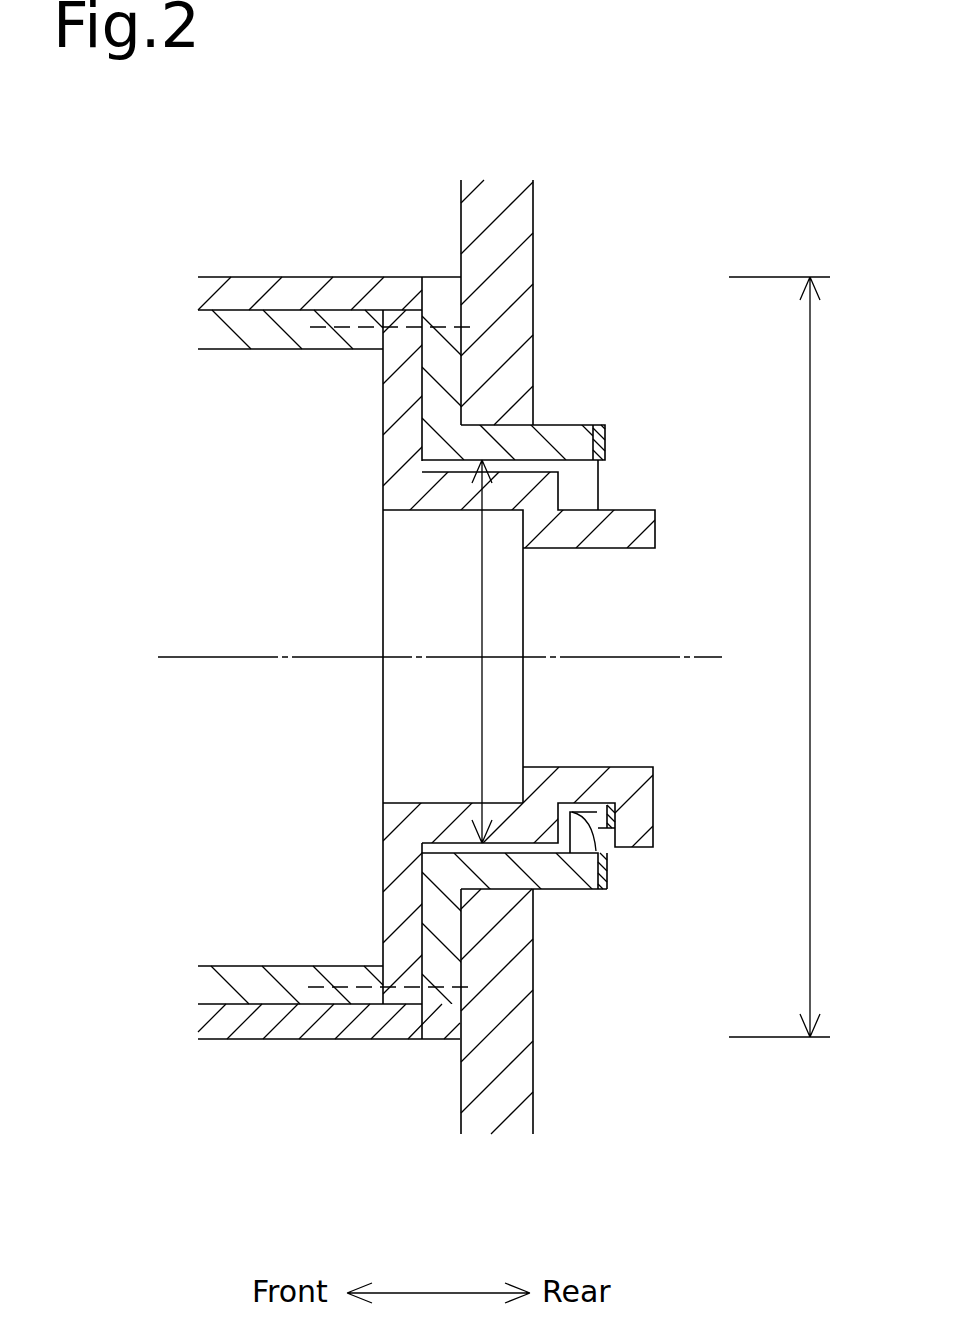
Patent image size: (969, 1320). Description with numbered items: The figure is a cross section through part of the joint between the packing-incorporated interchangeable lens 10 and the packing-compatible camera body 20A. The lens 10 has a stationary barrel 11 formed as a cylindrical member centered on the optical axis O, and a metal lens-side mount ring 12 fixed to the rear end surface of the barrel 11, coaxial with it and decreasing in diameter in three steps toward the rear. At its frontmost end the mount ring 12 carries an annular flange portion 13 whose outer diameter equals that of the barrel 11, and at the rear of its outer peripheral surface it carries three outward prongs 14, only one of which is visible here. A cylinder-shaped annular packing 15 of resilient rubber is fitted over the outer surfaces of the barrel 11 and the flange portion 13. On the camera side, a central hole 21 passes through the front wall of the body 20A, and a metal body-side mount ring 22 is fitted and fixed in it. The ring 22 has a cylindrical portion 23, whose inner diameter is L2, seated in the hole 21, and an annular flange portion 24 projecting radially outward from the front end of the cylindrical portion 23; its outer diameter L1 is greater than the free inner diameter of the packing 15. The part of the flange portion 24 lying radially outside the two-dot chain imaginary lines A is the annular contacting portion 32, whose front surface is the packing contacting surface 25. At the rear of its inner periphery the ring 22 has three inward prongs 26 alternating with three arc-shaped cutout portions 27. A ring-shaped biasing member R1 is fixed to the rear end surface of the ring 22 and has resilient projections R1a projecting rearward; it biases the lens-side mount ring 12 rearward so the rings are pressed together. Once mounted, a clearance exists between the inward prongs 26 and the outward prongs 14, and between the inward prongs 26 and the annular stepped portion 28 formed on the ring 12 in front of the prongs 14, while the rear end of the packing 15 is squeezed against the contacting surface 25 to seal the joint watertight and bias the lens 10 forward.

The packing-incorporated interchangeable lens 10 is at (170, 217).
The stationary barrel 11 is at (287, 318).
The lens-side mount ring 12 is at (520, 828).
The annular flange portion 13 is at (398, 327).
The outward prongs 14 is at (657, 827).
The annular packing 15 is at (304, 1040).
The packing-compatible camera body 20A is at (428, 176).
The central hole 21 is at (490, 430).
The body-side mount ring 22 is at (592, 428).
The cylindrical portion 23 is at (547, 438).
The annular flange portion 24 is at (437, 392).
The packing contacting surface 25 is at (445, 293).
The inward prongs 26 is at (632, 845).
The arc-shaped cutout portions 27 is at (600, 487).
The annular stepped portion 28 is at (597, 887).
The annular contacting portion 32 is at (420, 296).
The imaginary lines A is at (365, 330).
The optical axis O is at (232, 657).
The outer diameter of the annular flange portion L1 is at (788, 657).
The inner diameter of the cylindrical portion L2 is at (467, 651).
The ring-shaped biasing member R1 is at (608, 870).
The resilient projections R1a is at (615, 810).